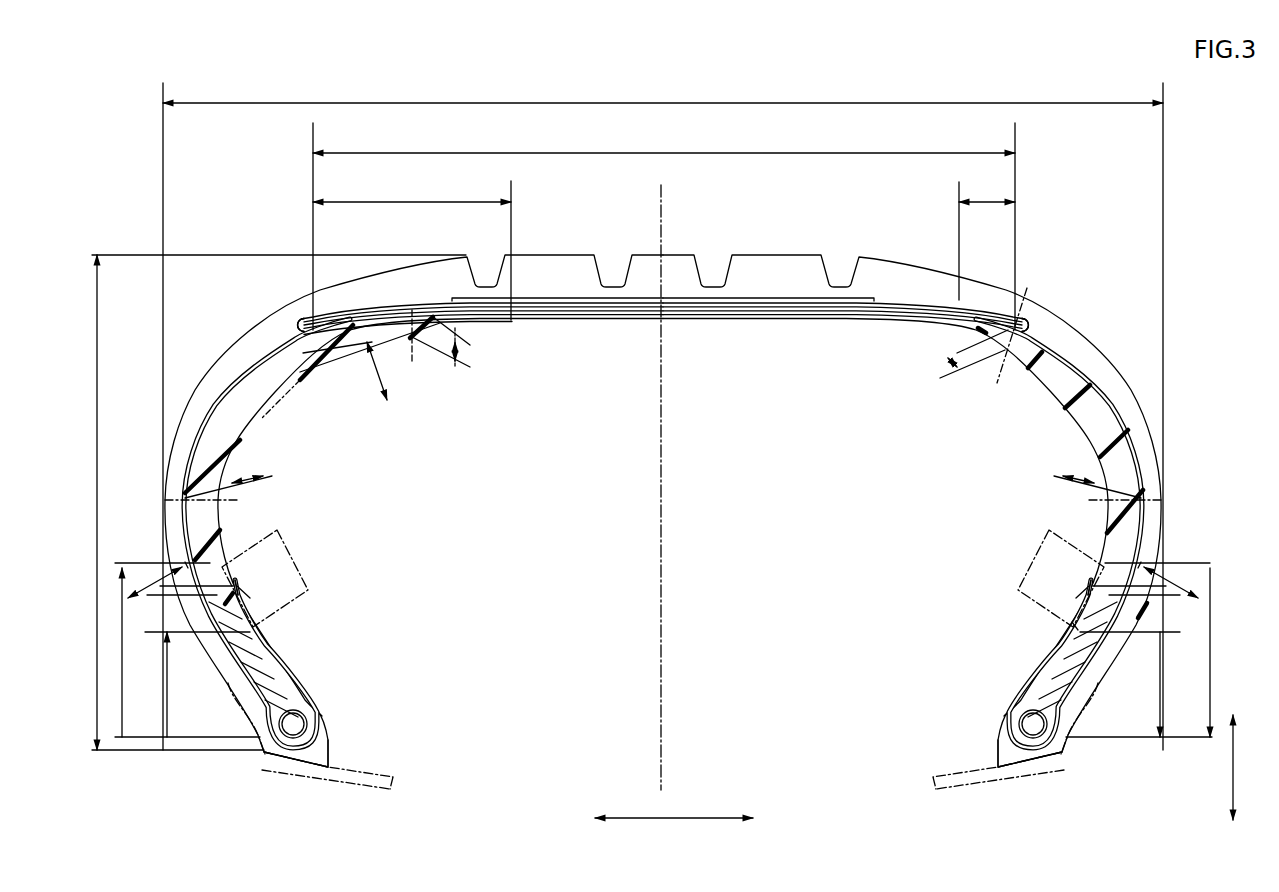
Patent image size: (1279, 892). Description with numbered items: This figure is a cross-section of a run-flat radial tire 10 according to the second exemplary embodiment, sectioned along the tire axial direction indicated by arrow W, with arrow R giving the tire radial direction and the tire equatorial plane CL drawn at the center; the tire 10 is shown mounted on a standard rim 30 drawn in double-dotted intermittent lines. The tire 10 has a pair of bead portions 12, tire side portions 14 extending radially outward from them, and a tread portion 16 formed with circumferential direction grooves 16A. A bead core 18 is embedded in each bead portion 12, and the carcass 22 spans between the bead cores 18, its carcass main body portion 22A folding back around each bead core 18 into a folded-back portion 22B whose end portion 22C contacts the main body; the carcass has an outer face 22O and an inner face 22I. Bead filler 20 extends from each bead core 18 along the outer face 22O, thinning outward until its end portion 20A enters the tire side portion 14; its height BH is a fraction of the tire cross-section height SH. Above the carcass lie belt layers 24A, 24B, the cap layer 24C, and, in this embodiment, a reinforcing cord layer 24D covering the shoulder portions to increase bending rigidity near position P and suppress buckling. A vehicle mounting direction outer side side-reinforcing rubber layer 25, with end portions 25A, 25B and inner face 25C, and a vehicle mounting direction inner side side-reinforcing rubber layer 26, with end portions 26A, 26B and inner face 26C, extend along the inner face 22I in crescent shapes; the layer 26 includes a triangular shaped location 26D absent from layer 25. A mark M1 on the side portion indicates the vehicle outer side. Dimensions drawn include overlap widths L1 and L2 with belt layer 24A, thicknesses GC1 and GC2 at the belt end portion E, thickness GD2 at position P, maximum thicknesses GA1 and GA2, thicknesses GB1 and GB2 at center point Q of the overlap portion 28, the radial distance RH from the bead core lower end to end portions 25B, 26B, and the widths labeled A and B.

The run-flat radial tire 10 is at (663, 472).
The bead portion 12 is at (663, 657).
The tire side portion 14 is at (180, 418).
The tread portion 16 is at (665, 228).
The circumferential direction groove 16A is at (613, 262).
The bead core 18 is at (305, 725).
The bead filler 20 is at (663, 632).
The end portion of bead filler 20A is at (225, 572).
The carcass 22 is at (660, 529).
The carcass main body portion 22A is at (228, 383).
The folded-back portion 22B is at (240, 660).
The end portion of folded-back portion 22C is at (185, 562).
The inner face of carcass 22I is at (274, 401).
The outer face of carcass 22O is at (180, 496).
The belt layer 24A is at (665, 297).
The second belt layer 24B is at (460, 298).
The cap layer 24C is at (663, 272).
The reinforcing cord layer 24D is at (299, 326).
The vehicle mounting direction outer side side-reinforcing rubber layer 25 is at (1052, 481).
The end portion of side-reinforcing rubber layer 25 25A is at (960, 330).
The end portion of side-reinforcing rubber layer 25 25B is at (1073, 625).
The inner face of side-reinforcing rubber layer 25 25C is at (1106, 515).
The vehicle mounting direction inner side side-reinforcing rubber layer 26 is at (358, 476).
The end portion of side-reinforcing rubber layer 26 26A is at (512, 324).
The end portion of side-reinforcing rubber layer 26 26B is at (253, 627).
The inner face of side-reinforcing rubber layer 26 26C is at (222, 523).
The triangular shaped location 26D is at (392, 350).
The overlap portion 28 is at (297, 566).
The standard rim 30 is at (360, 785).
The belt width A is at (660, 152).
The tire section width B is at (660, 102).
The tire equatorial plane CL is at (662, 190).
The tire axial direction end portion of belt layer E is at (296, 330).
The position P is at (413, 306).
The center point of overlap portion Q is at (240, 585).
The overlap width L1 is at (991, 201).
The overlap width L2 is at (406, 201).
The tire cross-section height SH is at (97, 455).
The bead filler height BH is at (124, 622).
The tire radial direction distance RH is at (168, 668).
The maximum thickness GA1 is at (1061, 476).
The maximum thickness GA2 is at (266, 476).
The thickness GB1 is at (1154, 590).
The thickness GB2 is at (172, 590).
The thickness GC1 is at (950, 384).
The thickness GC2 is at (388, 404).
The thickness GD2 is at (470, 362).
The mark M1 is at (1148, 612).
The tire axial direction arrow W is at (661, 819).
The tire radial direction arrow R is at (1236, 768).